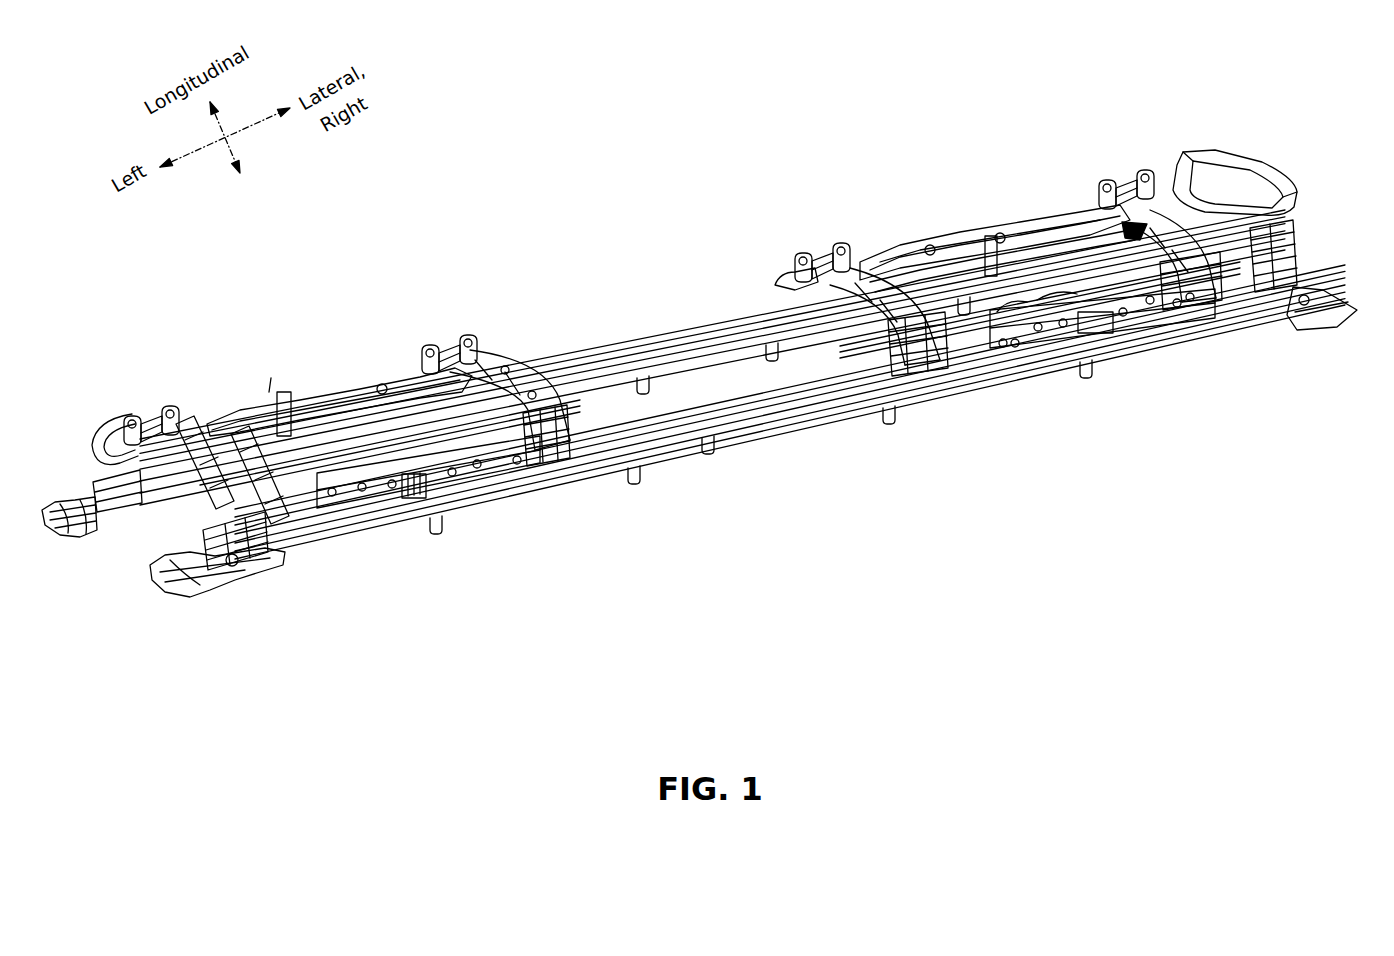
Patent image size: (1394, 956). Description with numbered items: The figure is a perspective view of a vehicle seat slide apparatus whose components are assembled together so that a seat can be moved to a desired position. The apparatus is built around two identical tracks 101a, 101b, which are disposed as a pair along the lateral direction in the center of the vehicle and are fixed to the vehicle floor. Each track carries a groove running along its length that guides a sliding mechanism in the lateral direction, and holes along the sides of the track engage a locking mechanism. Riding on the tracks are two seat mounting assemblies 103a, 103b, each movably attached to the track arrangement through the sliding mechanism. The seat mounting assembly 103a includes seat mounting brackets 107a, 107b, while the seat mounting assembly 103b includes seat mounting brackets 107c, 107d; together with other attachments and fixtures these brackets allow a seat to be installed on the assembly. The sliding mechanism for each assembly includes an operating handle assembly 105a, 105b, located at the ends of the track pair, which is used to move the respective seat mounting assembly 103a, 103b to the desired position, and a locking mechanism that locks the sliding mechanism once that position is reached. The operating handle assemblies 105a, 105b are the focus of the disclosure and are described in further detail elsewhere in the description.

The track 101a is at (653, 340).
The track 101b is at (770, 435).
The seat mounting assembly 103a is at (300, 372).
The seat mounting assembly 103b is at (967, 225).
The operating handle assembly 105a is at (132, 512).
The operating handle assembly 105b is at (1295, 223).
The seat mounting bracket 107a is at (150, 412).
The seat mounting bracket 107b is at (450, 342).
The seat mounting bracket 107c is at (816, 250).
The seat mounting bracket 107d is at (1128, 180).